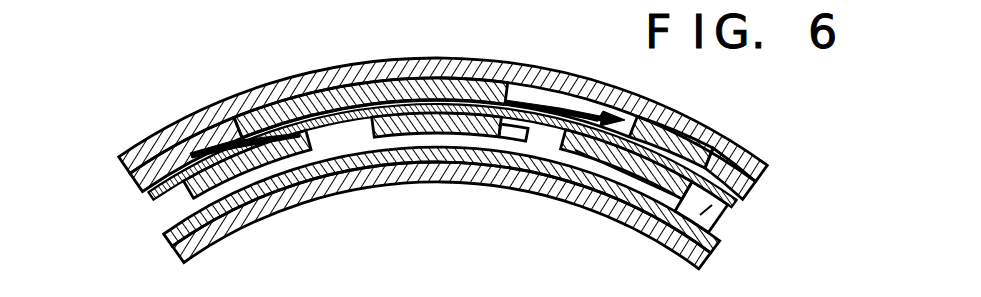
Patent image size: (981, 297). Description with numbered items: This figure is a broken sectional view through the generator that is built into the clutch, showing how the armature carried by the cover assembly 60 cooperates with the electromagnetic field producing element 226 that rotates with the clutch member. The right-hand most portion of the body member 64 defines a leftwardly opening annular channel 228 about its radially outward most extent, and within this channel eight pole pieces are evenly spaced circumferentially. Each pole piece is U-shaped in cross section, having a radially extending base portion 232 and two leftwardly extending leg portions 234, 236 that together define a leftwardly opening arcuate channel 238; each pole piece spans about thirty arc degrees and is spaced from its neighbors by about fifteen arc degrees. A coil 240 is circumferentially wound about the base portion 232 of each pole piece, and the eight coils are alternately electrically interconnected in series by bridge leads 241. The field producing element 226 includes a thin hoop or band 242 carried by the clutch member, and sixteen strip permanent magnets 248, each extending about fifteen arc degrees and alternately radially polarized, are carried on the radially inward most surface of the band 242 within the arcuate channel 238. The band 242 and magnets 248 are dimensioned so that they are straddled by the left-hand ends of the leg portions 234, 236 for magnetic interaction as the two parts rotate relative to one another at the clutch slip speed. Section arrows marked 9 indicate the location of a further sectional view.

The cover assembly 60 is at (124, 132).
The body member 64 is at (581, 78).
The electromagnetic field producing element 226 is at (177, 202).
The annular channel 228 is at (186, 148).
The base portion 232 is at (667, 257).
The leg portion 234 is at (409, 58).
The leg portion 236 is at (383, 160).
The arcuate channel 238 is at (330, 145).
The coil 240 is at (513, 135).
The bridge leads 241 is at (575, 92).
The band 242 is at (738, 207).
The strip permanent magnets 248 is at (283, 100).
The section line 9 is at (525, 19).